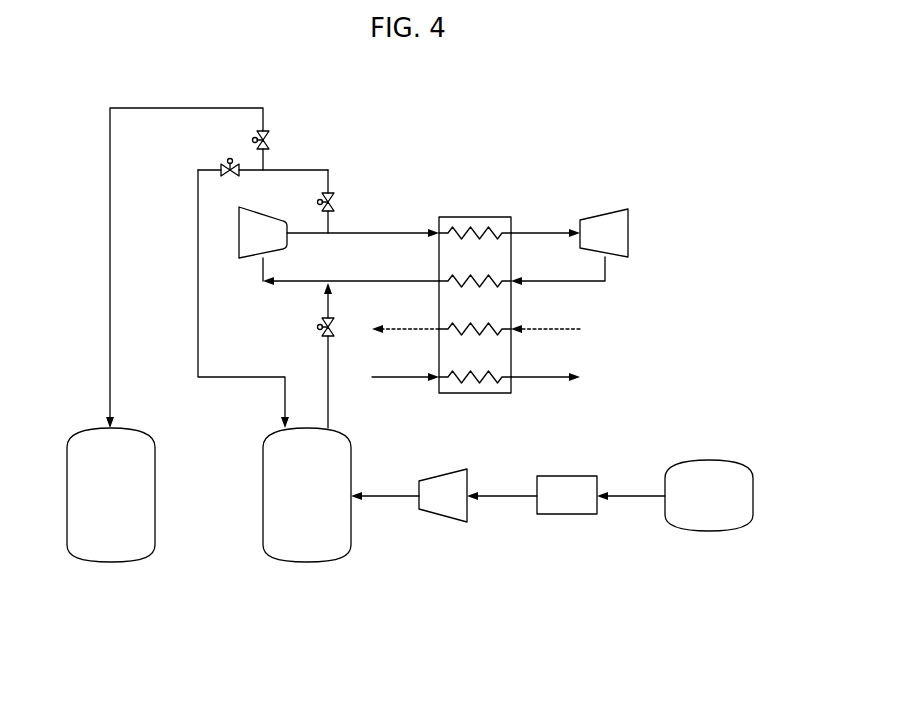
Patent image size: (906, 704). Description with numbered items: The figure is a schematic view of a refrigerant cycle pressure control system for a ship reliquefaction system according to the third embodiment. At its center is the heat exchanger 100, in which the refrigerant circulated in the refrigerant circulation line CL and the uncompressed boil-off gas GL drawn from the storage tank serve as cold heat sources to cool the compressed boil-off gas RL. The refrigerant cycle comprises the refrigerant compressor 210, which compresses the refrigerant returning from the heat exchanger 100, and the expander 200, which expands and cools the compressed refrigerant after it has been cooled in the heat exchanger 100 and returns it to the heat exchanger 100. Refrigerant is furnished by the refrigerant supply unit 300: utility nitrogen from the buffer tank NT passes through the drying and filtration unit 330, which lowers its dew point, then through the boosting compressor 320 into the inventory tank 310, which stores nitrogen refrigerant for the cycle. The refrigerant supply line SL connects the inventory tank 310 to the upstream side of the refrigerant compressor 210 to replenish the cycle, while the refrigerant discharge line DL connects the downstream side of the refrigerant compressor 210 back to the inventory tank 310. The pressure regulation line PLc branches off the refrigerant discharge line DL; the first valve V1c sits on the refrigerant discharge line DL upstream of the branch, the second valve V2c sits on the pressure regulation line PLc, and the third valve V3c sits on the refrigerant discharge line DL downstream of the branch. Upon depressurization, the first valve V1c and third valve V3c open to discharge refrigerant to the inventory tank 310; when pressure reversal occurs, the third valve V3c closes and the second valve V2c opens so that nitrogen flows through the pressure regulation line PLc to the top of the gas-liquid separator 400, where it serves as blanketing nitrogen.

The heat exchanger 100 is at (475, 217).
The expander 200 is at (604, 209).
The refrigerant compressor 210 is at (243, 259).
The refrigerant supply unit 300 is at (452, 589).
The inventory tank 310 is at (307, 562).
The boosting compressor 320 is at (441, 516).
The drying and filtration unit 330 is at (567, 514).
The gas-liquid separator 400 is at (110, 562).
The buffer tank NT is at (710, 531).
The pressure regulation line PLc is at (185, 107).
The first valve V1c is at (333, 202).
The second valve V2c is at (268, 139).
The third valve V3c is at (230, 158).
The refrigerant circulation line CL is at (607, 281).
The uncompressed boil-off gas GL is at (551, 329).
The compressed boil-off gas RL is at (397, 377).
The refrigerant supply line SL is at (326, 351).
The refrigerant discharge line DL is at (240, 377).